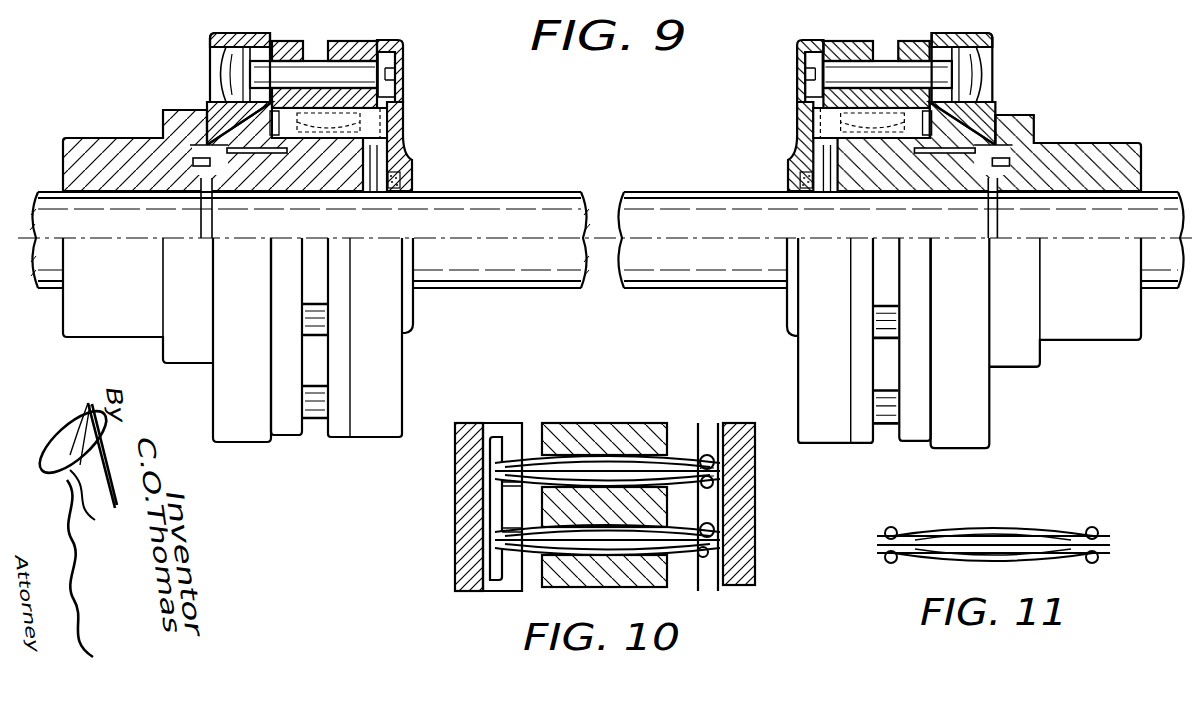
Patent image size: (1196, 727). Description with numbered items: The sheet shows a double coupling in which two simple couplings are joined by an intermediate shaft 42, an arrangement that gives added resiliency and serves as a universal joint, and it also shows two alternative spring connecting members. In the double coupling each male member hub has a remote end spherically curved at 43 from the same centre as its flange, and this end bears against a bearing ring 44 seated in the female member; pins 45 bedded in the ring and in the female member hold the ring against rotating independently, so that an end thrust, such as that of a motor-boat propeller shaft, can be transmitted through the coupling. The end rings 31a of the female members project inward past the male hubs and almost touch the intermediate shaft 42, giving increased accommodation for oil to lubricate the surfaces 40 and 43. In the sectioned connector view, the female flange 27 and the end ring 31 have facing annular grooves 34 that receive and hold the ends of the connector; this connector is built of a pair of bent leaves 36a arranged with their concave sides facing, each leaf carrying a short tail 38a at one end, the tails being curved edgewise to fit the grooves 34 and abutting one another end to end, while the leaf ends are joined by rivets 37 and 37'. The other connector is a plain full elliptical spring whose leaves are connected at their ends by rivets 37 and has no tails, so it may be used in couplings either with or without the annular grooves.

In FIG. 10, the flange 27 is at (762, 498).
In FIG. 10, the end ring 31 is at (457, 492).
In FIG. 9, the end ring 31a is at (405, 110).
In FIG. 10, the annular groove 34 is at (493, 430).
In FIG. 10, the leaf 36a is at (627, 483).
In FIG. 11, the rivet 37 is at (993, 530).
In FIG. 10, the rivet 37' is at (730, 548).
In FIG. 10, the tail 38a is at (497, 450).
In FIG. 9, the bearing surface 40 is at (400, 129).
In FIG. 9, the intermediate shaft 42 is at (607, 240).
In FIG. 9, the spherically curved hub end 43 is at (220, 172).
In FIG. 9, the bearing ring 44 is at (208, 148).
In FIG. 9, the pin 45 is at (197, 162).